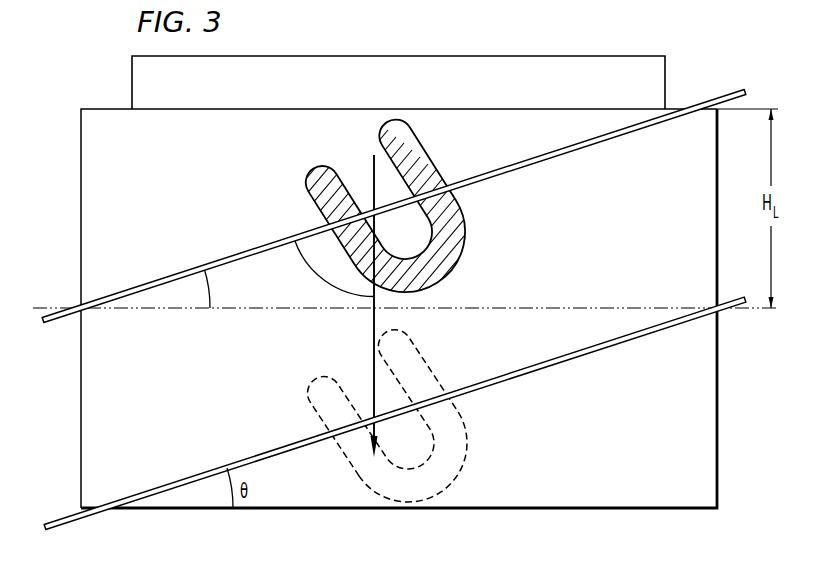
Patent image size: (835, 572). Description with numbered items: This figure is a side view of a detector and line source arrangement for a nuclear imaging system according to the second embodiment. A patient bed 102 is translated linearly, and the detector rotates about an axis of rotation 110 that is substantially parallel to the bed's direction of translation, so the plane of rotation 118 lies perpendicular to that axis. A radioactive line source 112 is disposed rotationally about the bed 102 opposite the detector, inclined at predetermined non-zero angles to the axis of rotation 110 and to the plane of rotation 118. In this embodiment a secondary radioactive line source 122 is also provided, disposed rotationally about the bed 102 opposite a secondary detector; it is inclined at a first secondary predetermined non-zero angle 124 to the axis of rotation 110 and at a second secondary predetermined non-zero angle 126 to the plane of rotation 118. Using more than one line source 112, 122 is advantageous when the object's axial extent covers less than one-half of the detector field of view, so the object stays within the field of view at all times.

The bed 102 is at (618, 90).
The axis of rotation 110 is at (424, 368).
The radioactive line source 112 is at (620, 346).
The plane of rotation 118 is at (153, 346).
The secondary radioactive line source 122 is at (143, 264).
The first secondary predetermined non-zero angle 124 is at (322, 285).
The second secondary predetermined non-zero angle 126 is at (209, 283).